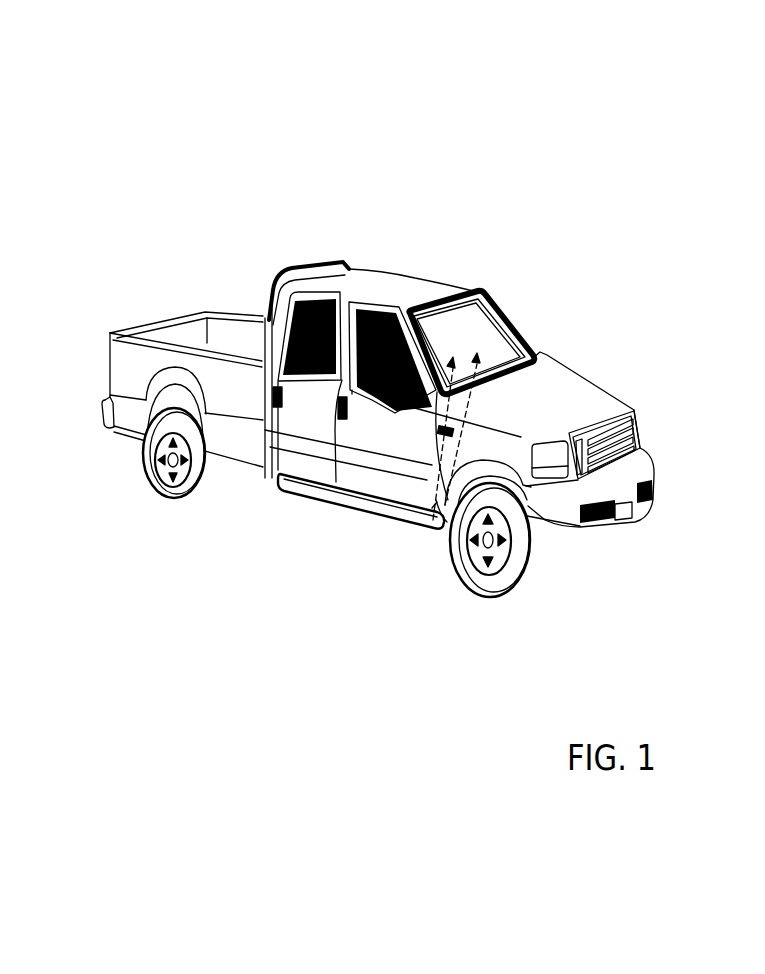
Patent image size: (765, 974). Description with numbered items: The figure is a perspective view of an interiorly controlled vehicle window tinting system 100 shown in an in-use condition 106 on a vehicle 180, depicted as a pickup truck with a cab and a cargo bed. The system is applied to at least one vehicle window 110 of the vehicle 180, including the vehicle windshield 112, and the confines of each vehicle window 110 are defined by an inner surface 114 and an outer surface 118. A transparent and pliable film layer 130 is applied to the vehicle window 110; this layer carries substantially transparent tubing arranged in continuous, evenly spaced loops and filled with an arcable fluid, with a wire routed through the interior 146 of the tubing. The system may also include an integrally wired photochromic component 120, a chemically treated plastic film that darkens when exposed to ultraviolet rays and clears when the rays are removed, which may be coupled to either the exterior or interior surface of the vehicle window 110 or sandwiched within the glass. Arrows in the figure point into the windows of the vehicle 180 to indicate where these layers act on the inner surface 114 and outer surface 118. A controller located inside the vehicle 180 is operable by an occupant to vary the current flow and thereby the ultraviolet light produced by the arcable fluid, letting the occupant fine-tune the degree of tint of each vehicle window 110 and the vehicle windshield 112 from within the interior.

The interiorly controlled vehicle window tinting system 100 is at (378, 301).
The in-use condition 106 is at (422, 358).
The vehicle window 110 is at (327, 297).
The vehicle windshield 112 is at (495, 323).
The inner surface 114 is at (502, 350).
The outer surface 118 is at (387, 303).
The photochromic component 120 is at (432, 440).
The pliable film layer 130 is at (433, 522).
The interior of tubing 146 is at (310, 421).
The vehicle 180 is at (201, 300).